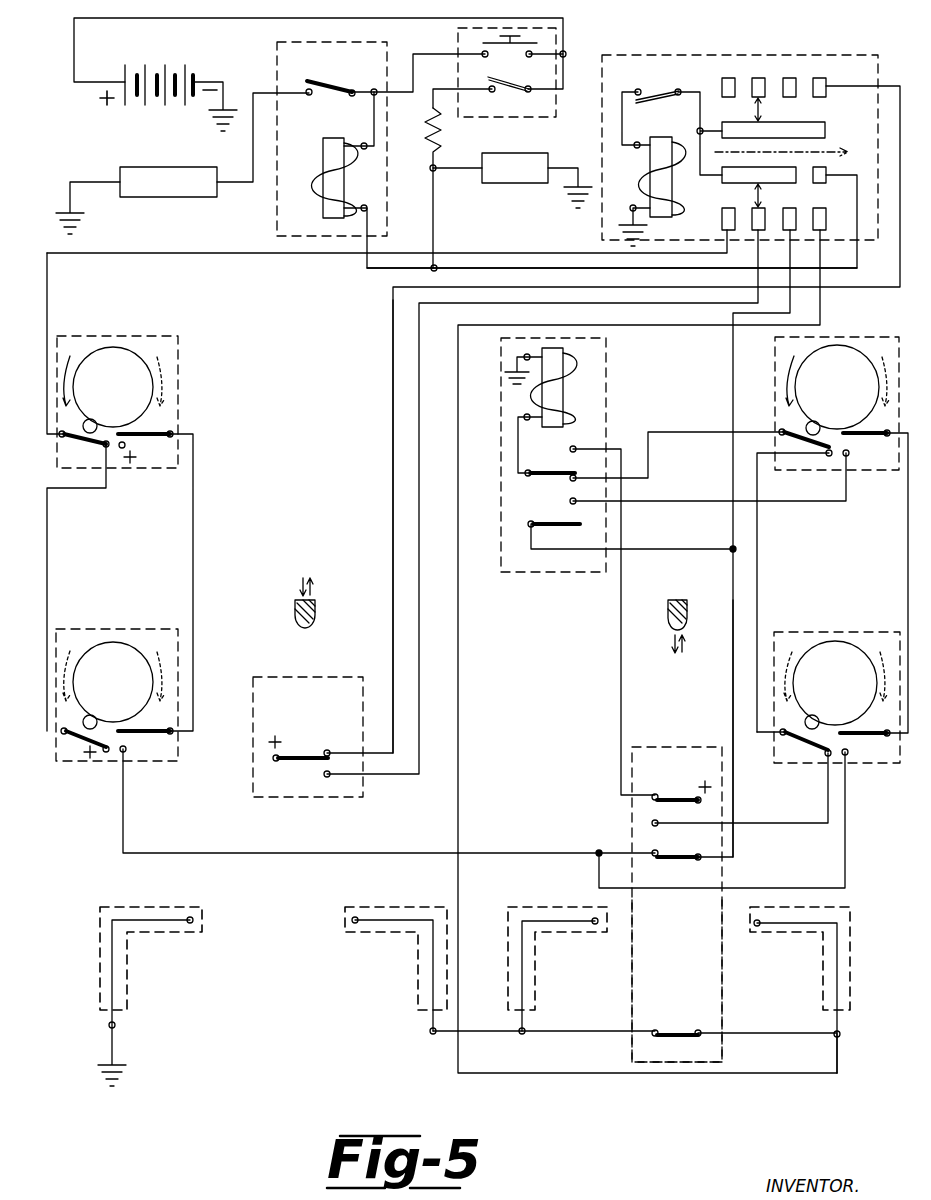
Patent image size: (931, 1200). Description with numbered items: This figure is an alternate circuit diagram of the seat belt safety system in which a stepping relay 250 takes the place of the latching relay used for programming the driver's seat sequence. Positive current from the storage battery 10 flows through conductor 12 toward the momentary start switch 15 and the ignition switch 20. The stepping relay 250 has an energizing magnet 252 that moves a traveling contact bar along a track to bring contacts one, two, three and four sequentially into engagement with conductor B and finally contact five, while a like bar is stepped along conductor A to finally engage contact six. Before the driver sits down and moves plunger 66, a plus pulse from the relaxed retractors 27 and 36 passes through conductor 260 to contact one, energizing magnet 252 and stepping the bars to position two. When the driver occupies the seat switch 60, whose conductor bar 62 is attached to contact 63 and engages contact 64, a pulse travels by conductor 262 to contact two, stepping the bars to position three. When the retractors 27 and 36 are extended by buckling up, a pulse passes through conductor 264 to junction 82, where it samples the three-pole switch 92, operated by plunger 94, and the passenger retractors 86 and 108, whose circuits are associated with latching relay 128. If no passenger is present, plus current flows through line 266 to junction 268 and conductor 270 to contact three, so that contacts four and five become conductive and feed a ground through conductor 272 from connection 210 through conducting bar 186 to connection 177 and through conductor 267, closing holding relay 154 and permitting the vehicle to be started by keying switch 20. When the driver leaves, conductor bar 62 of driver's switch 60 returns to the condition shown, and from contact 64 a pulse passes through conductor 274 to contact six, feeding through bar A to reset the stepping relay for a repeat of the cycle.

The storage battery 10 is at (119, 61).
The conductor 12 is at (215, 20).
The momentary start switch 15 is at (538, 42).
The ignition switch 20 is at (558, 52).
The holding relay 154 is at (298, 45).
The stepping relay 250 is at (719, 137).
The energizing magnet 252 is at (650, 157).
The conductor 260 is at (323, 256).
The conductor 272 is at (505, 268).
The retractor device 27 is at (142, 335).
The retractor device 36 is at (100, 628).
The plunger 66 is at (316, 613).
The seat switch 60 is at (299, 753).
The conductor bar 62 is at (295, 755).
The contact 63 is at (274, 760).
The contact 64 is at (328, 750).
The conductor 264 is at (300, 852).
The conductor 274 is at (393, 480).
The conductor 262 is at (417, 515).
The conductor 267 is at (460, 688).
The latching relay 128 is at (522, 574).
The conductor 270 is at (732, 350).
The junction 268 is at (732, 547).
The line 266 is at (732, 677).
The retractor 108 is at (842, 337).
The retractor device 86 is at (848, 632).
The plunger 94 is at (668, 600).
The junction 82 is at (599, 851).
The three-pole switch 92 is at (722, 948).
The conducting bar 186 is at (670, 1031).
The junction 177 is at (840, 1037).
The connection 210 is at (115, 1025).